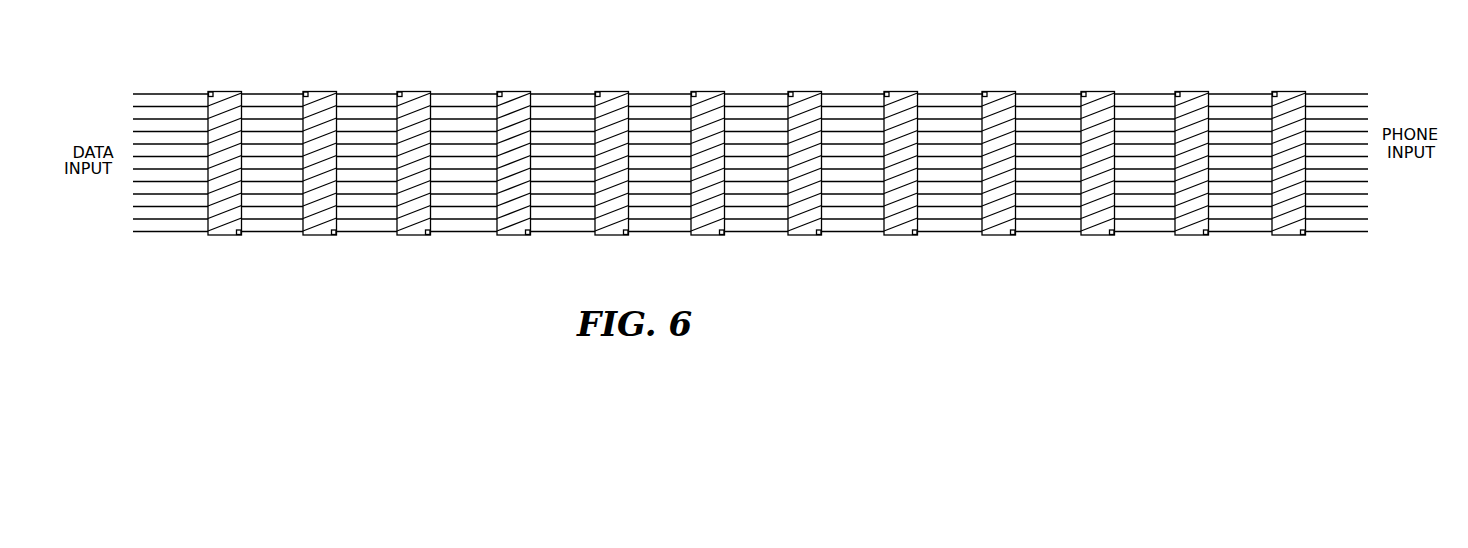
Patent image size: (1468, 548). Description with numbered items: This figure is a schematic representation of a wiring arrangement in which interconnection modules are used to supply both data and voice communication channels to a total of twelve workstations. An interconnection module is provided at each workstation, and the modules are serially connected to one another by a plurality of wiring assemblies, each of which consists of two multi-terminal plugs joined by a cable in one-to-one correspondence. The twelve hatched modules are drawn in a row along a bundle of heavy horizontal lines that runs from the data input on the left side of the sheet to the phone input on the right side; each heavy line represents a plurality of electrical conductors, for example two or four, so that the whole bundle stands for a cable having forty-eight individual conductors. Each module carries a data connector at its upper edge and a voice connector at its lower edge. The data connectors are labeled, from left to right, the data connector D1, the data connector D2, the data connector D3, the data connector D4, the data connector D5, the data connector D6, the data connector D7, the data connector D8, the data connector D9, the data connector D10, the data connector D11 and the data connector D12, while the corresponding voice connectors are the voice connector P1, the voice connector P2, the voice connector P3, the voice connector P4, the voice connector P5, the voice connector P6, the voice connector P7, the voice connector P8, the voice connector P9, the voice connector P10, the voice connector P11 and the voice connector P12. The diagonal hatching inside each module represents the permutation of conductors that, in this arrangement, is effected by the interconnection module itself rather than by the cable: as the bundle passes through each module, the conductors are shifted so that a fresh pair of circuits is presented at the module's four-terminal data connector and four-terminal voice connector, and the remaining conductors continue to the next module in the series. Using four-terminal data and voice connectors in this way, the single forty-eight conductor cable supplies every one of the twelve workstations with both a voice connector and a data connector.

The data input terminal 1 D1 is at (212, 92).
The data input terminal 2 D2 is at (307, 92).
The data input terminal 3 D3 is at (401, 92).
The data input terminal 4 D4 is at (501, 92).
The data input terminal 5 D5 is at (599, 92).
The data input terminal 6 D6 is at (695, 92).
The data input terminal 7 D7 is at (792, 92).
The data input terminal 8 D8 is at (888, 92).
The data input terminal 9 D9 is at (986, 92).
The data input terminal 10 D10 is at (1085, 92).
The data input terminal 11 D11 is at (1179, 92).
The data input terminal 12 D12 is at (1276, 92).
The phone input terminal 1 P1 is at (238, 235).
The phone input terminal 2 P2 is at (333, 235).
The phone input terminal 3 P3 is at (427, 235).
The phone input terminal 4 P4 is at (527, 235).
The phone input terminal 5 P5 is at (625, 235).
The phone input terminal 6 P6 is at (721, 235).
The phone input terminal 7 P7 is at (818, 235).
The phone input terminal 8 P8 is at (914, 235).
The phone input terminal 9 P9 is at (1012, 235).
The phone input terminal 10 P10 is at (1111, 235).
The phone input terminal 11 P11 is at (1205, 235).
The phone input terminal 12 P12 is at (1302, 235).